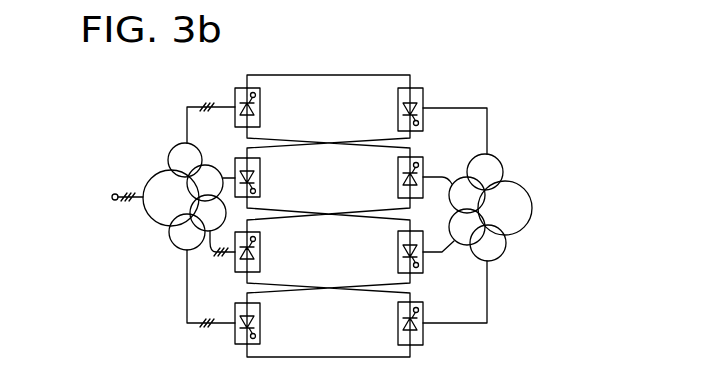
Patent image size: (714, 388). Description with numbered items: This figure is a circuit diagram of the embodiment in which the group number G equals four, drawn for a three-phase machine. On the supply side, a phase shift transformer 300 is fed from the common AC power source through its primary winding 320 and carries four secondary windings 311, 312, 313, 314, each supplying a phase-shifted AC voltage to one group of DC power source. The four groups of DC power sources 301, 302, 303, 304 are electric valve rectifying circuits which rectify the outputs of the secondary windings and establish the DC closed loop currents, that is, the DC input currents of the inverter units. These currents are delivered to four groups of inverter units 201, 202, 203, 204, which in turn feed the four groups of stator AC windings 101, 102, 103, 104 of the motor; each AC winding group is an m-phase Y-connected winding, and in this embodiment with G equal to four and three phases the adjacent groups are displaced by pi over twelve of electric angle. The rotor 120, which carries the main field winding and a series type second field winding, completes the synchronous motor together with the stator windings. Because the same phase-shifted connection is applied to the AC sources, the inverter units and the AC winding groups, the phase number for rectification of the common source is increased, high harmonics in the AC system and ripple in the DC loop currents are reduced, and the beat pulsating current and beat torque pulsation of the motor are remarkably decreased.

The phase shift transformer 300 is at (125, 192).
The primary winding 320 is at (147, 212).
The secondary winding 311 is at (172, 147).
The secondary winding 312 is at (210, 166).
The secondary winding 313 is at (212, 232).
The secondary winding 314 is at (162, 233).
The first DC power source 301 is at (257, 88).
The second DC power source 302 is at (260, 191).
The DC power source 303 is at (268, 252).
The DC power source 304 is at (261, 341).
The inverter unit 201 is at (398, 112).
The inverter unit 202 is at (398, 192).
The inverter unit 203 is at (398, 250).
The inverter unit 204 is at (398, 334).
The first AC winding 101 is at (499, 160).
The second AC winding 102 is at (465, 177).
The AC winding 103 is at (462, 244).
The AC winding 104 is at (502, 256).
The rotor 120 is at (607, 170).